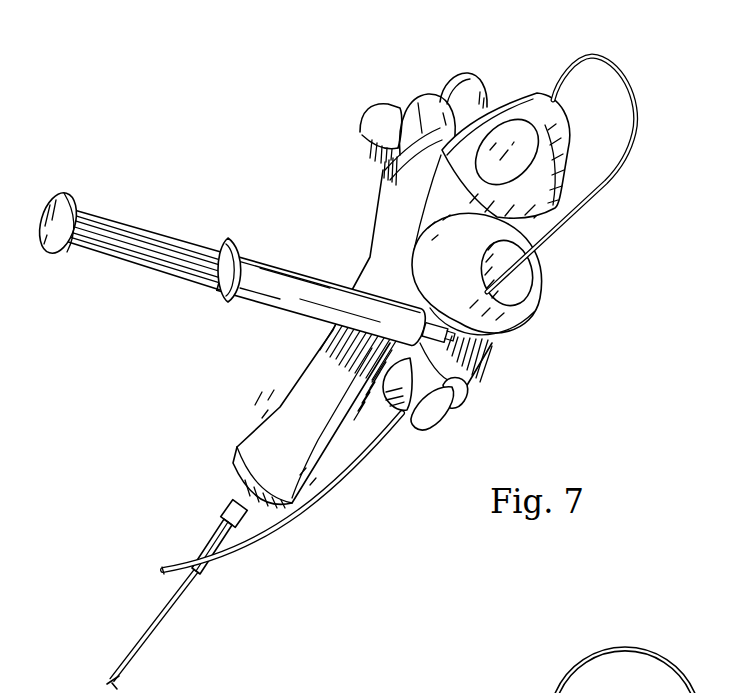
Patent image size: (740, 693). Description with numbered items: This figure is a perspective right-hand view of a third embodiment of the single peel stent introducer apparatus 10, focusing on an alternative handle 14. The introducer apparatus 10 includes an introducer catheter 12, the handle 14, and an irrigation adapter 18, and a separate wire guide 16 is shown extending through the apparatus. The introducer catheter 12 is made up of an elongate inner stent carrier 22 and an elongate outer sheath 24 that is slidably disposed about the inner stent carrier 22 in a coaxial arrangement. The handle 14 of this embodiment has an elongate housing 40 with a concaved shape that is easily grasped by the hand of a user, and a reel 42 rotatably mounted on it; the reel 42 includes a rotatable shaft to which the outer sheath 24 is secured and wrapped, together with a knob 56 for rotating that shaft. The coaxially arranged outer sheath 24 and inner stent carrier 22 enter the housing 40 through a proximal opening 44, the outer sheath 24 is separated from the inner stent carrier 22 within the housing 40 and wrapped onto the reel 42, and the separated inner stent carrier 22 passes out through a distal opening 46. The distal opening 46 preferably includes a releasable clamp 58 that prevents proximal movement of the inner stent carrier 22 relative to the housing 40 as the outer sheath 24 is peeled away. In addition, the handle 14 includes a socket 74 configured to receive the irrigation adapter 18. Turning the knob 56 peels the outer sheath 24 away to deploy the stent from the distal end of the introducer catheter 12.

The single peel stent introducer apparatus 10 is at (263, 95).
The introducer catheter 12 is at (155, 617).
The handle 14 is at (263, 147).
The wire guide 16 is at (323, 498).
The irrigation adapter 18 is at (488, 403).
The inner stent carrier 22 is at (635, 113).
The outer sheath 24 is at (133, 645).
The housing 40 is at (297, 392).
The reel 42 is at (375, 189).
The proximal opening 44 is at (232, 510).
The distal opening 46 is at (553, 100).
The knob 56 is at (420, 93).
The clamp 58 is at (512, 95).
The socket 74 is at (527, 280).